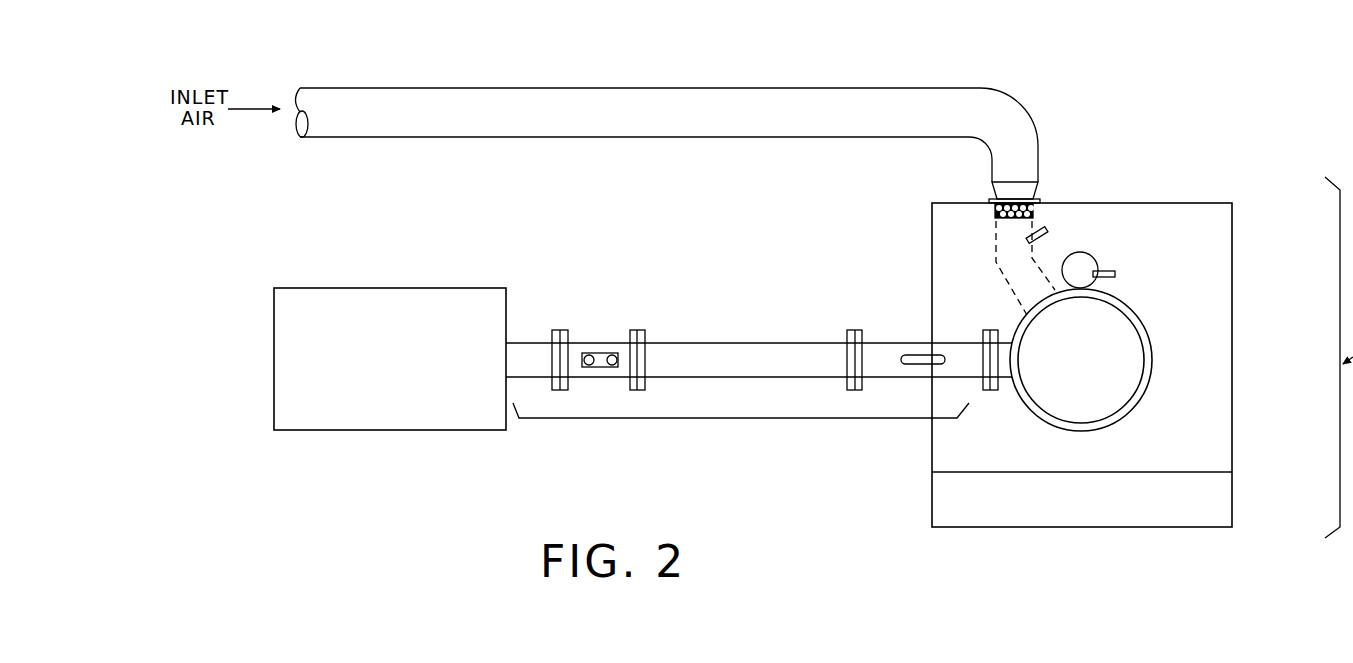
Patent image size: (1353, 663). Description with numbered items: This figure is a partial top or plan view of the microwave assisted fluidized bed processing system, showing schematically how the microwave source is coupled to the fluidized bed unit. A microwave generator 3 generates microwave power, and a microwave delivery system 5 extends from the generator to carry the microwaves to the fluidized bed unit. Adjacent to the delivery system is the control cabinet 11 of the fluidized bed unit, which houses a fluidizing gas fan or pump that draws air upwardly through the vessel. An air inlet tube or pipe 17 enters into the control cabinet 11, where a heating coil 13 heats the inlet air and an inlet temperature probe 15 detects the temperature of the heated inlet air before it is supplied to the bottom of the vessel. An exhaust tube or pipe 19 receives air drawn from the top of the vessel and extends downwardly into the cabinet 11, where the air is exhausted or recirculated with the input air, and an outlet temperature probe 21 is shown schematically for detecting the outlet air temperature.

The microwave generator 3 is at (356, 436).
The microwave delivery system 5 is at (735, 423).
The control cabinet 11 is at (1236, 290).
The heating coil 13 is at (992, 209).
The inlet temperature probe 15 is at (1026, 243).
The air inlet tube or pipe 17 is at (771, 86).
The exhaust tube or pipe 19 is at (1089, 252).
The outlet temperature probe 21 is at (1110, 269).